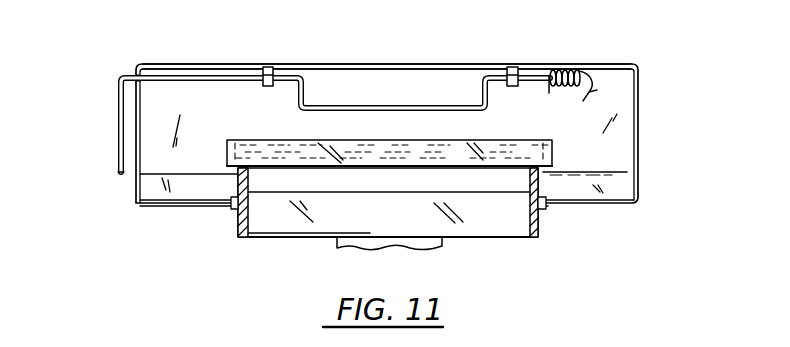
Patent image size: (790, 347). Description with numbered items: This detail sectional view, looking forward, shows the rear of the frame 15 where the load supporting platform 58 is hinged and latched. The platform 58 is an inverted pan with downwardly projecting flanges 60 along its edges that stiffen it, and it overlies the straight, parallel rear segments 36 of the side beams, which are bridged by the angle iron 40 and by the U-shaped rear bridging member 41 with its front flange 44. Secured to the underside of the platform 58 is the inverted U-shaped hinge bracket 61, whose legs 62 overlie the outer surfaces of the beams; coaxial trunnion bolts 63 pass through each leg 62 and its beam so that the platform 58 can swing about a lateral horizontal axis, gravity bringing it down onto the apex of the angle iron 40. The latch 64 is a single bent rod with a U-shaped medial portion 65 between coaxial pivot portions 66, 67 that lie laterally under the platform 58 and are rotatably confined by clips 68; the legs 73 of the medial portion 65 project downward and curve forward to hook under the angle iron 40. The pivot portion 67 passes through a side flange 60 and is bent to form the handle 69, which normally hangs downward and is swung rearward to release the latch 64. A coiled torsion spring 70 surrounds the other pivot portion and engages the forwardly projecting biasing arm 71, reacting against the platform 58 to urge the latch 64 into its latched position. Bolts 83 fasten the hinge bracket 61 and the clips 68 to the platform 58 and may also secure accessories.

The frame 15 is at (552, 229).
The rear segments of the beams 36 is at (238, 228).
The angle iron 40 is at (553, 160).
The rear bridging member 41 is at (521, 245).
The front flange 44 is at (447, 226).
The load supporting platform 58 is at (376, 65).
The flanges 60 is at (133, 95).
The hinge bracket 61 is at (228, 186).
The legs 62 is at (544, 186).
The trunnion bolts 63 is at (548, 207).
The latch 64 is at (224, 88).
The U-shaped medial portion 65 is at (303, 92).
The pivot portion 66 is at (532, 76).
The pivot portion 67 is at (172, 85).
The clips 68 is at (268, 87).
The handle 69 is at (118, 125).
The coiled torsion spring 70 is at (567, 68).
The biasing arm 71 is at (589, 103).
The legs 73 is at (308, 93).
The bolts 83 is at (268, 66).